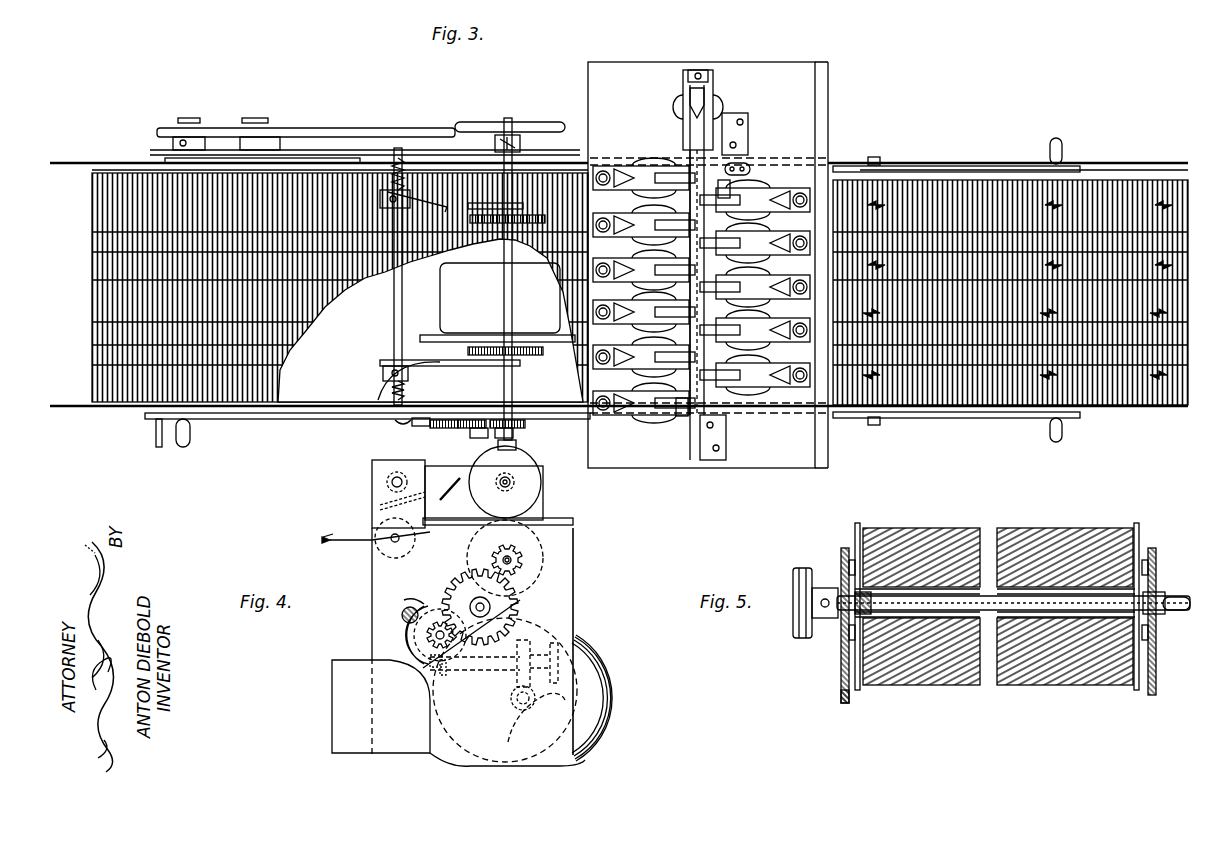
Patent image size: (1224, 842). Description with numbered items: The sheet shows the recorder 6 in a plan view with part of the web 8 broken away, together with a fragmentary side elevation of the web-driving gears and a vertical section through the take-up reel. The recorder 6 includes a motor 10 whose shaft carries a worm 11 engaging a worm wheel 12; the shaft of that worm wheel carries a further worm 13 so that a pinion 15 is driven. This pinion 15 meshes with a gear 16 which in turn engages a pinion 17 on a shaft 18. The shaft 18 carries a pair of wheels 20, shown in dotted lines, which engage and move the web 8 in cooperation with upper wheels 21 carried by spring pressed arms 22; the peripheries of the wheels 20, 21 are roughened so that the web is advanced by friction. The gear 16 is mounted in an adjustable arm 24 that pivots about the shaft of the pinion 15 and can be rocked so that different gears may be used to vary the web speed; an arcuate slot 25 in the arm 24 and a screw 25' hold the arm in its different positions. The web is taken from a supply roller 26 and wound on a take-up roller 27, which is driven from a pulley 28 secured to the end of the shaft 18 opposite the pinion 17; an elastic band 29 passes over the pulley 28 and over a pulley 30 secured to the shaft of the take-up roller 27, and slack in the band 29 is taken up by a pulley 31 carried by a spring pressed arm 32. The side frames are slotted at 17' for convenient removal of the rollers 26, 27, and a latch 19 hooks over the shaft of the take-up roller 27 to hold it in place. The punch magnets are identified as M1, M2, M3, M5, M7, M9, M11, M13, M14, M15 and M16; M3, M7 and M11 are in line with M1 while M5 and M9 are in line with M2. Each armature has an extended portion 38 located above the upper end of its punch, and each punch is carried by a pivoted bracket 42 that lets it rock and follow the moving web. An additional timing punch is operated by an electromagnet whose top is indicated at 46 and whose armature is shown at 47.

In FIG. 4, the recorder 6 is at (328, 735).
In FIG. 5, the recorder 6 is at (840, 674).
In FIG. 3, the web 8 is at (92, 288).
In FIG. 5, the web 8 is at (1005, 528).
In FIG. 4, the motor 10 is at (612, 694).
In FIG. 4, the worm 11 is at (523, 724).
In FIG. 4, the worm wheel 12 is at (539, 707).
In FIG. 4, the worm 13 is at (503, 690).
In FIG. 3, the pinion 15 is at (440, 430).
In FIG. 4, the pinion 15 is at (425, 635).
In FIG. 3, the gear 16 is at (462, 430).
In FIG. 4, the gear 16 is at (520, 605).
In FIG. 3, the pinion 17 is at (525, 435).
In FIG. 4, the pinion 17 is at (553, 552).
In FIG. 5, the slot 17' is at (999, 620).
In FIG. 3, the shaft 18 is at (507, 122).
In FIG. 4, the shaft 18 is at (508, 560).
In FIG. 3, the latch 19 is at (160, 445).
In FIG. 5, the latch 19 is at (1154, 626).
In FIG. 4, the wheels 20 is at (466, 553).
In FIG. 3, the upper wheels 21 is at (530, 215).
In FIG. 4, the upper wheels 21 is at (544, 484).
In FIG. 3, the spring pressed arms 22 is at (478, 205).
In FIG. 4, the spring pressed arms 22 is at (443, 488).
In FIG. 3, the adjustable arm 24 is at (418, 432).
In FIG. 4, the adjustable arm 24 is at (432, 598).
In FIG. 4, the arcuate slot 25 is at (388, 640).
In FIG. 3, the screw 25' is at (379, 433).
In FIG. 4, the screw 25' is at (402, 600).
In FIG. 3, the supply roller 26 is at (1122, 163).
In FIG. 3, the take-up roller 27 is at (50, 166).
In FIG. 5, the take-up roller 27 is at (857, 526).
In FIG. 3, the pulley 28 is at (535, 124).
In FIG. 3, the elastic band 29 is at (375, 128).
In FIG. 3, the pulley 30 is at (205, 124).
In FIG. 5, the pulley 30 is at (792, 584).
In FIG. 3, the pulley 31 is at (265, 125).
In FIG. 3, the spring pressed arm 32 is at (312, 145).
In FIG. 3, the extended portion of armature 38 is at (732, 195).
In FIG. 3, the bracket 42 is at (738, 160).
In FIG. 3, the electromagnet (top) 46 is at (720, 116).
In FIG. 3, the armature 47 is at (685, 150).
In FIG. 3, the punch magnet M1 is at (644, 178).
In FIG. 3, the punch magnet M2 is at (755, 200).
In FIG. 3, the punch magnet M3 is at (644, 225).
In FIG. 3, the punch magnet M5 is at (755, 243).
In FIG. 3, the punch magnet M7 is at (644, 270).
In FIG. 3, the punch magnet M9 is at (755, 287).
In FIG. 3, the punch magnet M11 is at (644, 312).
In FIG. 3, the punch magnet M13 is at (755, 330).
In FIG. 3, the punch magnet M14 is at (644, 357).
In FIG. 3, the punch magnet M15 is at (755, 375).
In FIG. 3, the punch magnet M16 is at (644, 403).